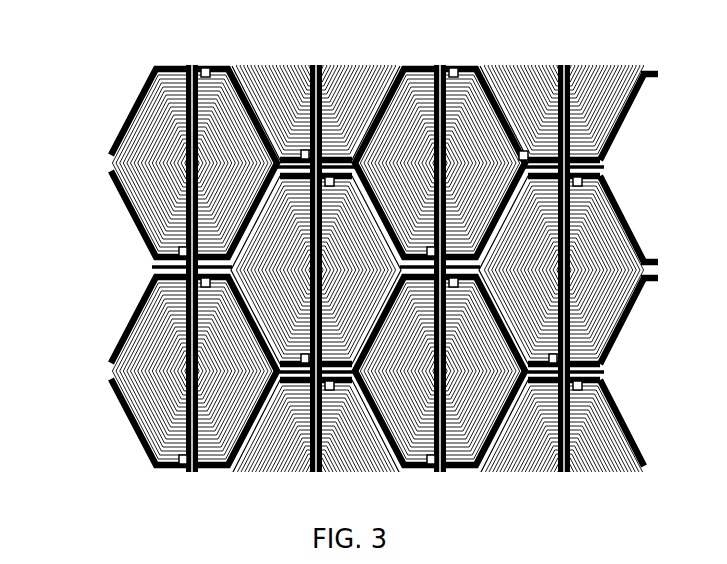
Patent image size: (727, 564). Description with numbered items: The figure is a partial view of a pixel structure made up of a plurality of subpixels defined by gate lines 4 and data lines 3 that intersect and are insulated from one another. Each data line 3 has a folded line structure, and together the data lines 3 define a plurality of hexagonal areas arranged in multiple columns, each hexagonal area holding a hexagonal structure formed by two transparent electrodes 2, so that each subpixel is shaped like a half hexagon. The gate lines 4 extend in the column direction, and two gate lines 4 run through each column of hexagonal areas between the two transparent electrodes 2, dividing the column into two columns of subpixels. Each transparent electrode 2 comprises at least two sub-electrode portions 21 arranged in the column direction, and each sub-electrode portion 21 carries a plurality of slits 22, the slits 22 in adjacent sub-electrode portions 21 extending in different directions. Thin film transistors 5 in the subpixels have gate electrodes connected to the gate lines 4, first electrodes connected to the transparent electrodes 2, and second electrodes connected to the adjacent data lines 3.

The transparent electrode 2 is at (152, 371).
The data line 3 is at (143, 93).
The gate line 4 is at (191, 66).
The thin film transistor 5 is at (211, 69).
The sub-electrode portion 21 is at (55, 397).
The slit 22 is at (157, 299).